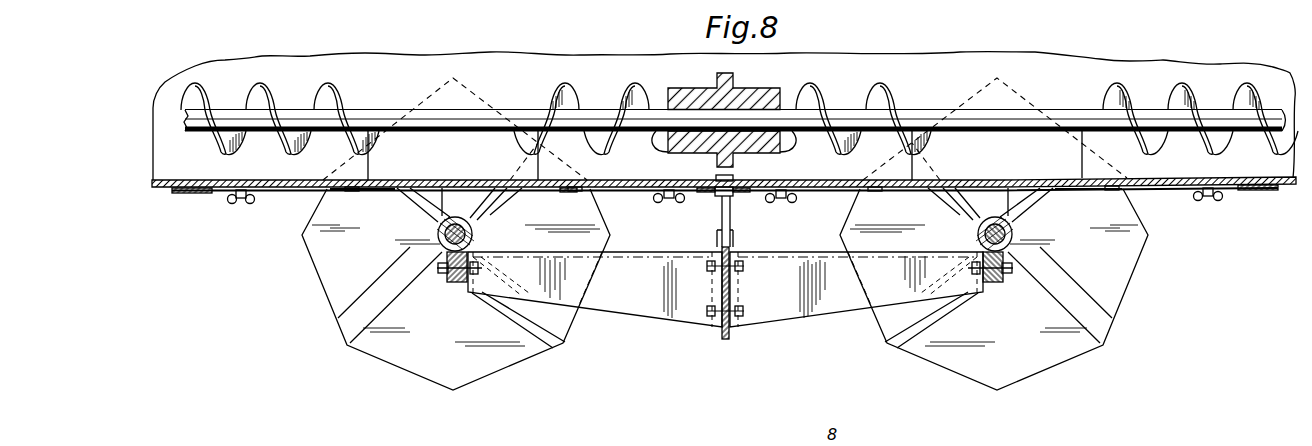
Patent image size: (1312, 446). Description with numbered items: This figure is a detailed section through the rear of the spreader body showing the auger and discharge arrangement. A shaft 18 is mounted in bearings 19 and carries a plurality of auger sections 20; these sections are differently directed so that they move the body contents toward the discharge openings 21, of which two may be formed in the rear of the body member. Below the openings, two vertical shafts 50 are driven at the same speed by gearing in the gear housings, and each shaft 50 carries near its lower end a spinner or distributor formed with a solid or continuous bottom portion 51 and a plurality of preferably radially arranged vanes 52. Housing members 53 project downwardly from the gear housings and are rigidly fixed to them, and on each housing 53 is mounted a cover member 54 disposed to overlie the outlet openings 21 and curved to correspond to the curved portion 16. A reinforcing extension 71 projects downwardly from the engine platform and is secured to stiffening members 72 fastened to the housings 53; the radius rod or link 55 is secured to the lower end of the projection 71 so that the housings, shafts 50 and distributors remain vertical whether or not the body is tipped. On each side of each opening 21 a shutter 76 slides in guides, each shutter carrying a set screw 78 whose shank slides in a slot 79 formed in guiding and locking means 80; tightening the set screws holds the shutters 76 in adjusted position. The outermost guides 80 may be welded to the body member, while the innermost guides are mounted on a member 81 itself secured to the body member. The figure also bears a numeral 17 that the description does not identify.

The curved portion 16 is at (170, 180).
The casing 17 is at (1053, 60).
The shaft 18 is at (500, 108).
The bearings 19 is at (742, 90).
The auger sections 20 is at (262, 97).
The discharge openings 21 is at (537, 176).
The vertical shaft 50 is at (438, 233).
The bottom portion 51 is at (345, 300).
The vanes 52 is at (358, 338).
The housing members 53 is at (475, 233).
The cover member 54 is at (366, 194).
The radius rod or link 55 is at (729, 219).
The reinforcing extension 71 is at (724, 342).
The stiffening members 72 is at (635, 303).
The shutter 76 is at (350, 191).
The set screw 78 is at (242, 204).
The slots 79 is at (215, 193).
The guiding and locking means 80 is at (185, 194).
The member 81 is at (713, 195).